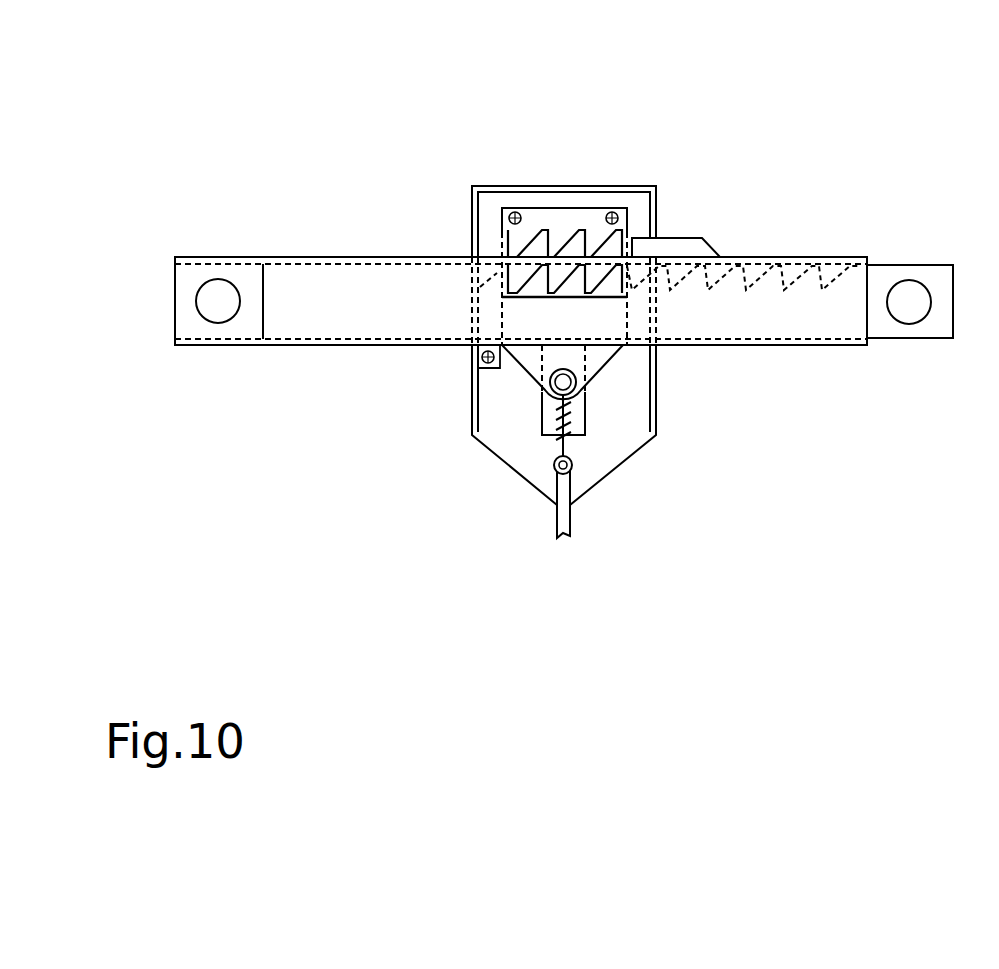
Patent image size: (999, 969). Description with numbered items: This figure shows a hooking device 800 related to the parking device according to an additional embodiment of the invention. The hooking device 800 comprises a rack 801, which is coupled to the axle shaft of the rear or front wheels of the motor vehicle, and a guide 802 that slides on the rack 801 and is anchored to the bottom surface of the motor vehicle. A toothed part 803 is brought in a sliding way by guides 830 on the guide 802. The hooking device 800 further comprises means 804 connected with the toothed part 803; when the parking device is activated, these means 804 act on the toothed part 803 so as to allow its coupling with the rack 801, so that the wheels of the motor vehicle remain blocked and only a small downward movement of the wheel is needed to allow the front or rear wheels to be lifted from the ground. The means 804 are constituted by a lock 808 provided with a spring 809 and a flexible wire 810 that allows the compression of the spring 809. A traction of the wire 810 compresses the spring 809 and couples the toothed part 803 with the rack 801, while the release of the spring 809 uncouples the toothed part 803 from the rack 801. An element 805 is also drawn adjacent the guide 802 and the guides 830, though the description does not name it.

The hooking device 800 is at (808, 127).
The rack 801 is at (893, 265).
The guide 802 is at (838, 258).
The toothed part 803 is at (518, 215).
The means 804 is at (624, 468).
The release lever 805 is at (666, 237).
The lock 808 is at (633, 452).
The spring 809 is at (566, 456).
The flexible wire 810 is at (570, 452).
The guides 830 is at (694, 236).